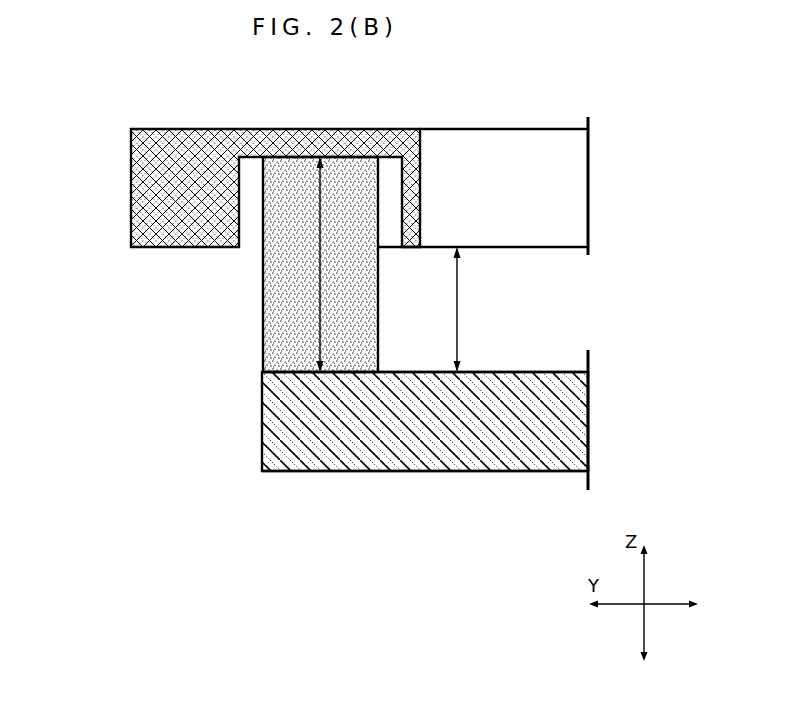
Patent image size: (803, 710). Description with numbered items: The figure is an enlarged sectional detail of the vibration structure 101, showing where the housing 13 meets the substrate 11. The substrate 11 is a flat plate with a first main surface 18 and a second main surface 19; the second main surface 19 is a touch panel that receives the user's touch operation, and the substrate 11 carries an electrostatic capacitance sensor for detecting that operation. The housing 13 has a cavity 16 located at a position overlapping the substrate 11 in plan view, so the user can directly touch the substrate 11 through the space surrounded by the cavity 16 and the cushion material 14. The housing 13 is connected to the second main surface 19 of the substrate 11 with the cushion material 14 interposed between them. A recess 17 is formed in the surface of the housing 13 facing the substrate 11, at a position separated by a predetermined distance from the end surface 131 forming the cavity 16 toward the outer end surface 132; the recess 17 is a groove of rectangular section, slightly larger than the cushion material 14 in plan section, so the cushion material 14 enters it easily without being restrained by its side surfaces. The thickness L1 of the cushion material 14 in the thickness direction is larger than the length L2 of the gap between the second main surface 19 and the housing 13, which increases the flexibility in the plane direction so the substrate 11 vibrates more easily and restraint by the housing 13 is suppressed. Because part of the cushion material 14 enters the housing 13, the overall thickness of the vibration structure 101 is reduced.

The vibration structure 101 is at (141, 103).
The housing 13 is at (173, 128).
The end surface 131 is at (422, 168).
The end surface 132 is at (130, 208).
The cushion material 14 is at (262, 268).
The cavity 16 is at (522, 163).
The recess 17 is at (390, 240).
The substrate 11 is at (378, 472).
The first main surface 18 is at (473, 473).
The second main surface 19 is at (555, 368).
The thickness of the cushion material L1 is at (317, 312).
The length of the gap L2 is at (459, 303).